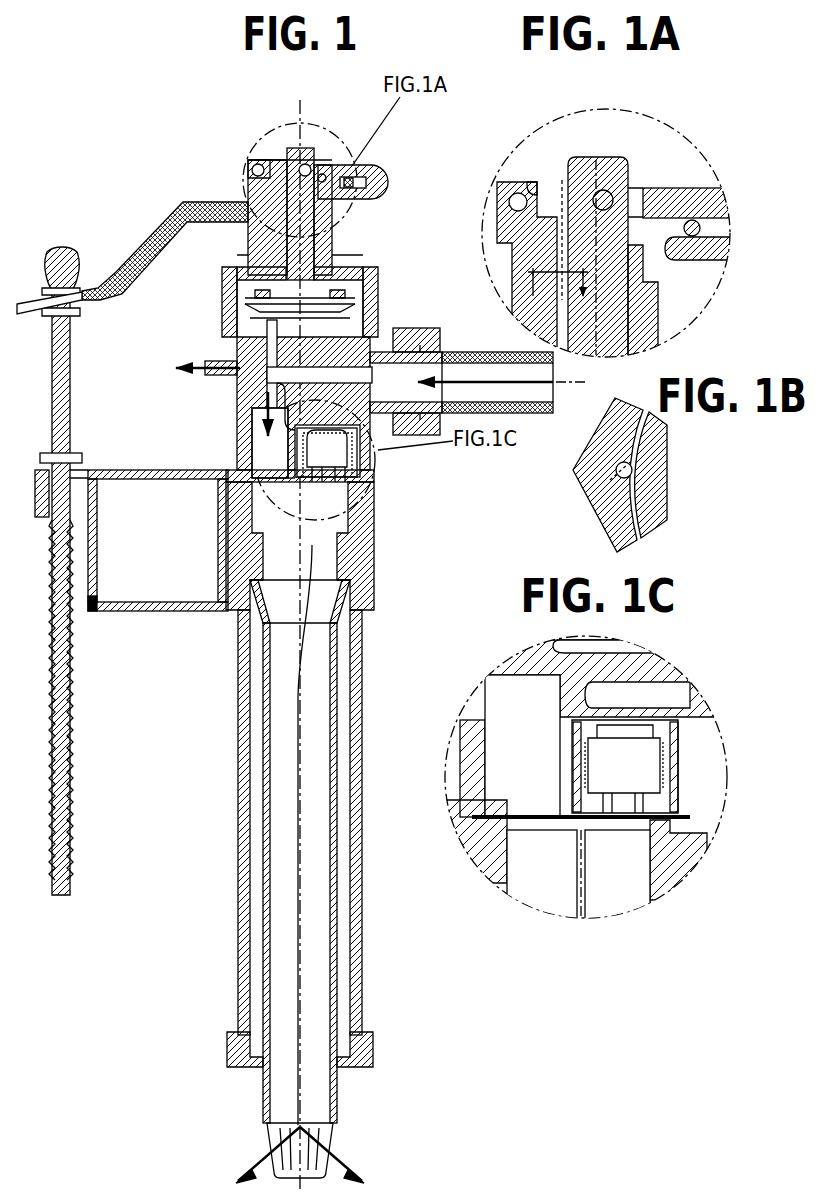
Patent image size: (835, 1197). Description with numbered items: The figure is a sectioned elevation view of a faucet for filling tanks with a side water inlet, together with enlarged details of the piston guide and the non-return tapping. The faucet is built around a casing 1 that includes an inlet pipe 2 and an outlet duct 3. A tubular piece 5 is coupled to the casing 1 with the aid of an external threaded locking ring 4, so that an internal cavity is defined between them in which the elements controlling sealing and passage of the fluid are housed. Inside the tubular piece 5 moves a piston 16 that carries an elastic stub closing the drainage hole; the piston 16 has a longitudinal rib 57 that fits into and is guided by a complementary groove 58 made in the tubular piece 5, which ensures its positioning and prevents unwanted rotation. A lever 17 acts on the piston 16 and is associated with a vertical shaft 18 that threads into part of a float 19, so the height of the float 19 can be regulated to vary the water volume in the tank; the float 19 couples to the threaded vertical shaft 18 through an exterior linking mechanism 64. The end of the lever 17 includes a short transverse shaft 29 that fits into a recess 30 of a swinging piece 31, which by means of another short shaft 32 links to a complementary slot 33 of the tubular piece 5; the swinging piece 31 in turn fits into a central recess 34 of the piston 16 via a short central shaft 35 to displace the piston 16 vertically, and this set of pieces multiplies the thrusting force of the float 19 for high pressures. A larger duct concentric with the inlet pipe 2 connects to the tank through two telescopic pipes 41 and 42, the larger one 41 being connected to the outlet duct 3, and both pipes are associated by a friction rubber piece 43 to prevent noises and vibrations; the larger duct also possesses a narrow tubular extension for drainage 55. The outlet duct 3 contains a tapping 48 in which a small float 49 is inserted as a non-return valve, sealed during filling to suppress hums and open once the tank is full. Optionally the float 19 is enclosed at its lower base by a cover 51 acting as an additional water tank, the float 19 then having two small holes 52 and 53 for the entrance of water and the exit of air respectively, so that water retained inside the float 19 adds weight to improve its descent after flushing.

In FIG. 1, the casing 1 is at (278, 376).
In FIG. 1, the inlet pipe 2 is at (422, 350).
In FIG. 1, the outlet duct 3 is at (255, 435).
In FIG. 1C, the outlet duct 3 is at (520, 750).
In FIG. 1, the external threaded locking ring 4 is at (372, 295).
In FIG. 1, the tubular piece 5 is at (250, 238).
In FIG. 1A, the piston 16 is at (648, 265).
In FIG. 1B, the piston 16 is at (650, 500).
In FIG. 1, the lever 17 is at (163, 236).
In FIG. 1, the vertical shaft 18 is at (70, 362).
In FIG. 1, the float 19 is at (378, 512).
In FIG. 1, the short transverse shaft 29 is at (362, 173).
In FIG. 1, the recess 30 is at (385, 184).
In FIG. 1, the swinging piece 31 is at (324, 174).
In FIG. 1, the short shaft 32 is at (252, 170).
In FIG. 1A, the short shaft 32 is at (500, 184).
In FIG. 1, the complementary slot 33 is at (256, 166).
In FIG. 1A, the complementary slot 33 is at (521, 192).
In FIG. 1, the central recess 34 is at (290, 160).
In FIG. 1A, the central recess 34 is at (613, 150).
In FIG. 1, the short central shaft 35 is at (303, 164).
In FIG. 1A, the short central shaft 35 is at (615, 200).
In FIG. 1, the telescopic pipe 41 is at (363, 778).
In FIG. 1, the telescopic pipe 42 is at (337, 830).
In FIG. 1, the friction rubber piece 43 is at (346, 1061).
In FIG. 1, the tapping 48 is at (336, 476).
In FIG. 1C, the tapping 48 is at (625, 812).
In FIG. 1, the small float 49 is at (330, 455).
In FIG. 1C, the small float 49 is at (615, 768).
In FIG. 1, the cover 51 is at (158, 580).
In FIG. 1, the small hole 52 is at (95, 612).
In FIG. 1, the small hole 53 is at (228, 612).
In FIG. 1, the narrow tubular extension for drainage 55 is at (210, 360).
In FIG. 1A, the longitudinal rib 57 is at (566, 245).
In FIG. 1B, the longitudinal rib 57 is at (630, 470).
In FIG. 1A, the complementary groove 58 is at (548, 255).
In FIG. 1B, the complementary groove 58 is at (606, 486).
In FIG. 1, the exterior linking mechanism 64 is at (77, 453).